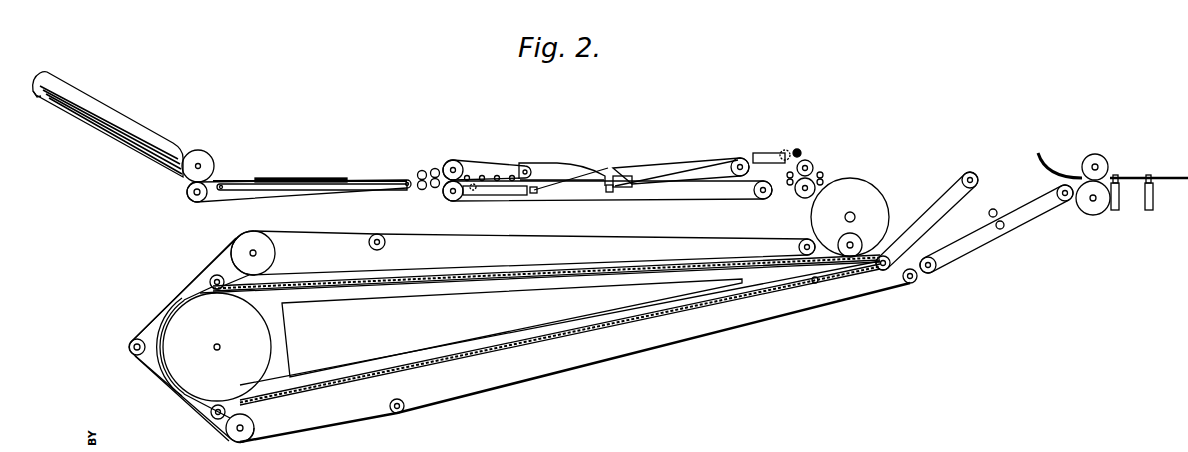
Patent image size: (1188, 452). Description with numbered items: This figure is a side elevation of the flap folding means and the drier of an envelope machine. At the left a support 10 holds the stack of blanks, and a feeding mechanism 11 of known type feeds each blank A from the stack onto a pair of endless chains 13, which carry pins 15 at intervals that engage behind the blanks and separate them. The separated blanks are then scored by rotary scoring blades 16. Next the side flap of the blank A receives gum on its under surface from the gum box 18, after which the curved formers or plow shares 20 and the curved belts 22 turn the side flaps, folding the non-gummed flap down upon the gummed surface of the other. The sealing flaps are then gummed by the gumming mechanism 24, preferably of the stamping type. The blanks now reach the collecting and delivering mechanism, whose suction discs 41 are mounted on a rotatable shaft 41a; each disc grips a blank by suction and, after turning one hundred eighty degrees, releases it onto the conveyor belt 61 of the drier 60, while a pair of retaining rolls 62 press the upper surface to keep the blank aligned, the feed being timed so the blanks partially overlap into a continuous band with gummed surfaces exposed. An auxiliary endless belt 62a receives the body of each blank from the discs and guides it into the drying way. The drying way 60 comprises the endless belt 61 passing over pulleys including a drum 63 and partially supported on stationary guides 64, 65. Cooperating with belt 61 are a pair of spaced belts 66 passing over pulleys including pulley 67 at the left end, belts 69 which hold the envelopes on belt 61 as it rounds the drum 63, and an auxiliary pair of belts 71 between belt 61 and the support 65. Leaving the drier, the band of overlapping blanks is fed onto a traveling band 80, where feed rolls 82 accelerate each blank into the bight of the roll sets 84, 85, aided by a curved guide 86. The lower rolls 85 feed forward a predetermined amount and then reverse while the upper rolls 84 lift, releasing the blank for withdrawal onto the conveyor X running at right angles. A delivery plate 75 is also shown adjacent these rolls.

The support 10 is at (70, 90).
The blank A is at (142, 140).
The feeding mechanism 11 is at (207, 149).
The endless chains 13 is at (238, 184).
The pins 15 is at (270, 180).
The rotary scoring blades 16 is at (432, 169).
The gum box 18 is at (492, 193).
The curved formers 20 is at (573, 177).
The curved belts 22 is at (668, 170).
The gumming mechanism 24 is at (820, 157).
The discs 41 is at (877, 187).
The rotatable shaft 41a is at (850, 212).
The retaining rolls 62 is at (856, 241).
The spaced belts 66 is at (676, 234).
The pulley 67 is at (214, 276).
The drum 63 is at (217, 347).
The belts 69 is at (158, 310).
The drier 60 is at (558, 382).
The stationary guide 64 is at (803, 267).
The stationary guide 65 is at (610, 332).
The auxiliary belts 71 is at (483, 394).
The endless belt 61 is at (832, 258).
The auxiliary endless belt 62a is at (942, 193).
The traveling band 80 is at (970, 253).
The feed rolls 82 is at (1000, 221).
The upper rolls 84 is at (1096, 154).
The lower rolls 85 is at (1094, 215).
The curved guide 86 is at (1050, 160).
The delivery plate 75 is at (1116, 164).
The conveyor X is at (1134, 175).